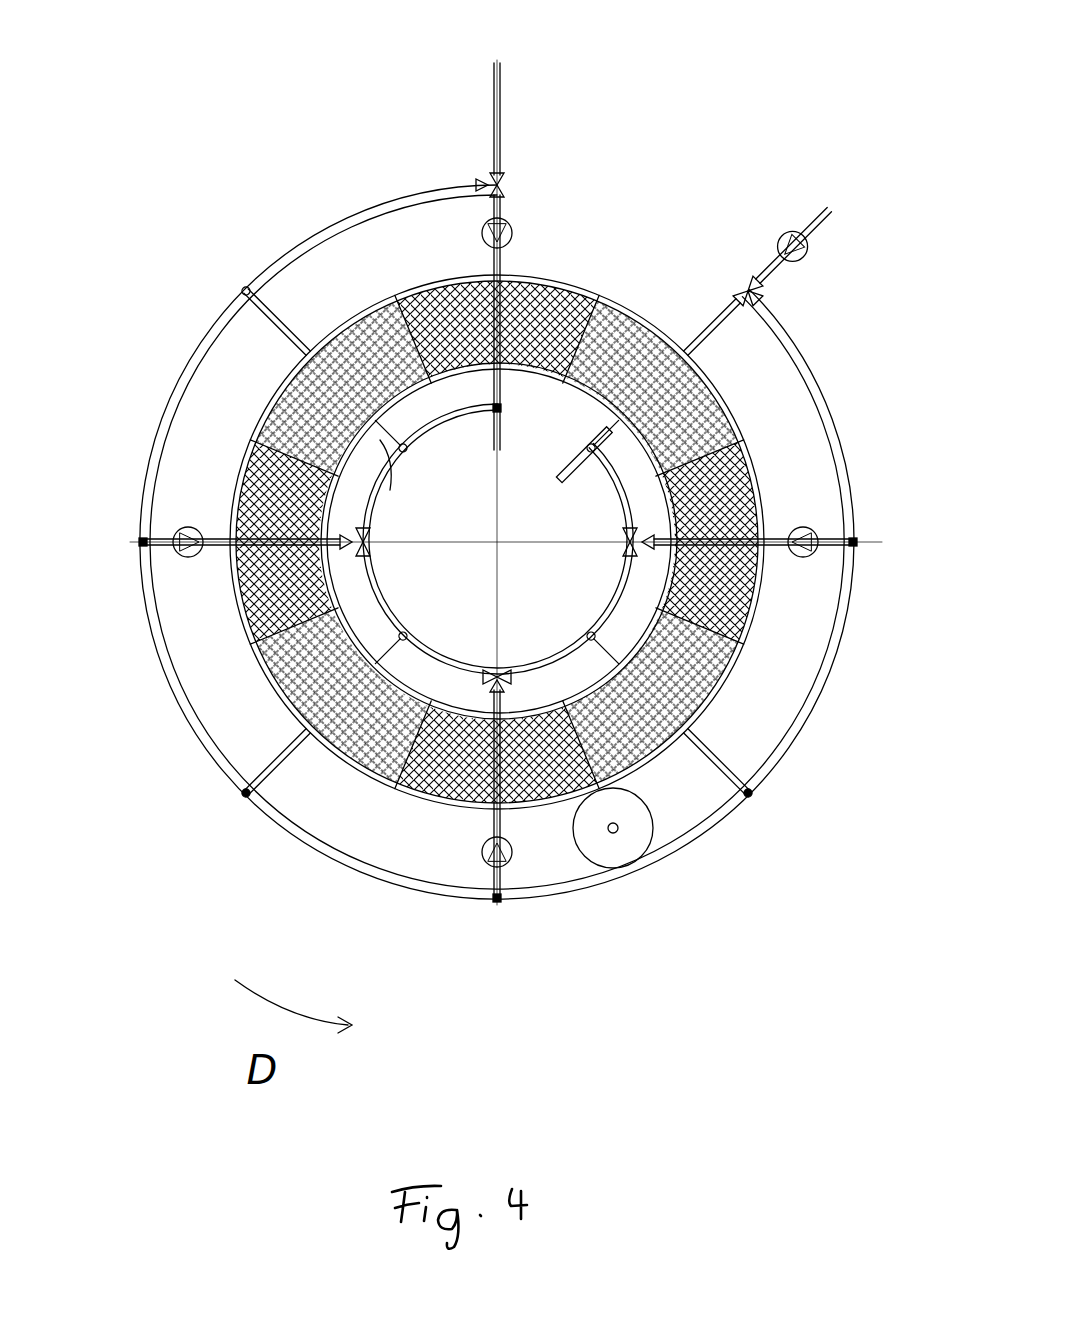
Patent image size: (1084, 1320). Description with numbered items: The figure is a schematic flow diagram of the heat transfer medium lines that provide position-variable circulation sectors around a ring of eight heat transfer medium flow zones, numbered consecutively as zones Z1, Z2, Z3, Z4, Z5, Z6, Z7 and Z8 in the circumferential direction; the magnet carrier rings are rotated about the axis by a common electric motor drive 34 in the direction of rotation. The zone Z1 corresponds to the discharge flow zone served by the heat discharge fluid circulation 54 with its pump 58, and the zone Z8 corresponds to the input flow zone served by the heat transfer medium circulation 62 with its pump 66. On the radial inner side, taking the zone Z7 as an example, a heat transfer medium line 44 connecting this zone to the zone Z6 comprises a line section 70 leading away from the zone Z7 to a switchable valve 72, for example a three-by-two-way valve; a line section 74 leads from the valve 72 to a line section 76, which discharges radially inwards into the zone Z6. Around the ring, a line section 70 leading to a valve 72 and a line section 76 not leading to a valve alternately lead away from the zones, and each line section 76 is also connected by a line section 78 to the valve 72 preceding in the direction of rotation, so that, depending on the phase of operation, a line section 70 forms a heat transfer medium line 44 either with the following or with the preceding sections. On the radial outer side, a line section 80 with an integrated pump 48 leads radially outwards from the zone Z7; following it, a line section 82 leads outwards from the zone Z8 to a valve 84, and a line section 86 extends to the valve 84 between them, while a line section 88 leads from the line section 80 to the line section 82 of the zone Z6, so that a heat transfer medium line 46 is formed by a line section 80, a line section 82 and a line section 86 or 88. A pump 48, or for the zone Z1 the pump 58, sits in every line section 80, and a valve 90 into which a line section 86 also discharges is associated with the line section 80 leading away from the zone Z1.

The electric motor drive 34 is at (647, 843).
The heat transfer medium line 44 is at (545, 534).
The heat transfer medium line 46 is at (846, 811).
The pump 48 is at (178, 528).
The heat discharge fluid circulation 54 is at (528, 107).
The pump 58 is at (480, 235).
The heat transfer medium circulation 62 is at (811, 188).
The pump 66 is at (782, 232).
The line section 70 is at (337, 548).
The switchable valve 72 is at (600, 540).
The line section 74 is at (598, 615).
The line section 76 is at (377, 498).
The line section 78 is at (612, 482).
The line section 80 is at (503, 215).
The line section 82 is at (712, 320).
The valve 84 is at (749, 285).
The line section 86 is at (798, 337).
The line section 88 is at (199, 372).
The valve 90 is at (488, 185).
The zone Z1 is at (525, 300).
The zone Z2 is at (293, 403).
The zone Z3 is at (265, 575).
The zone Z4 is at (353, 745).
The zone Z5 is at (463, 785).
The zone Z6 is at (653, 740).
The zone Z7 is at (760, 613).
The zone Z8 is at (718, 410).